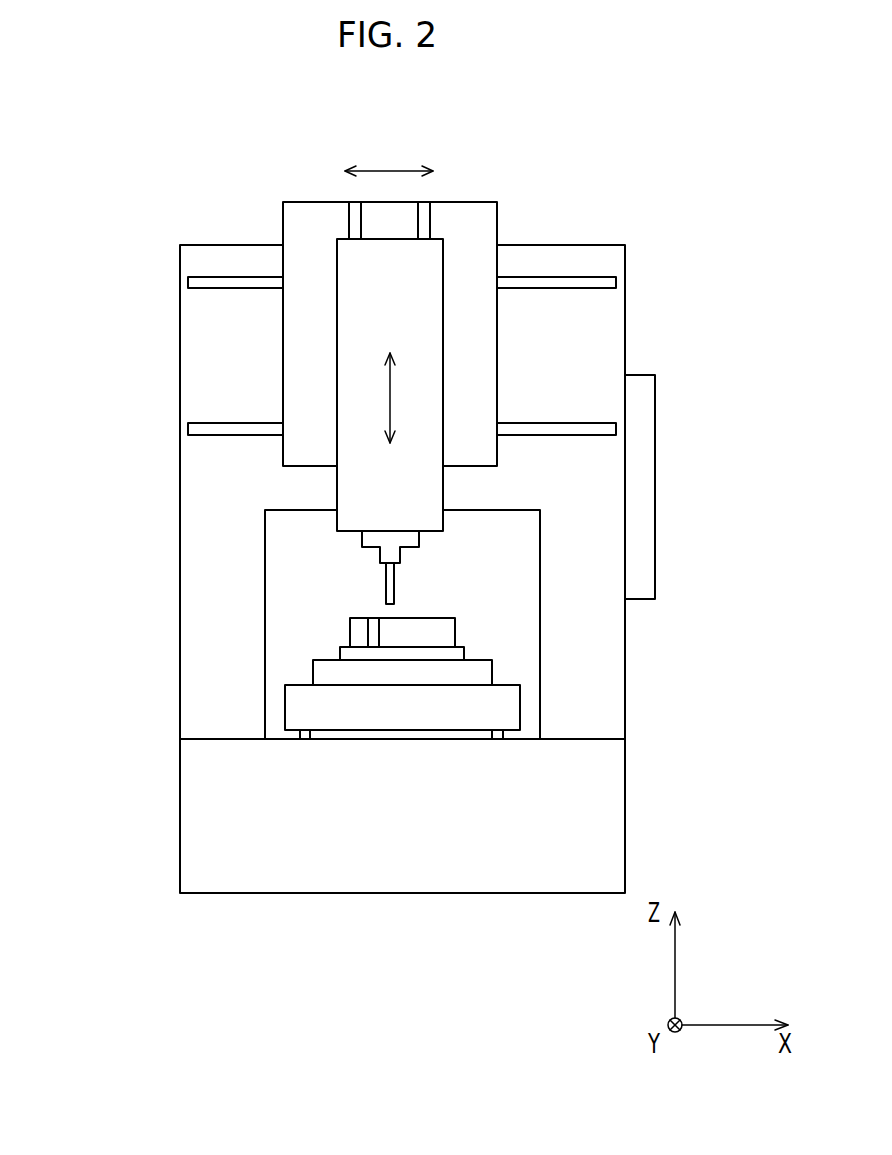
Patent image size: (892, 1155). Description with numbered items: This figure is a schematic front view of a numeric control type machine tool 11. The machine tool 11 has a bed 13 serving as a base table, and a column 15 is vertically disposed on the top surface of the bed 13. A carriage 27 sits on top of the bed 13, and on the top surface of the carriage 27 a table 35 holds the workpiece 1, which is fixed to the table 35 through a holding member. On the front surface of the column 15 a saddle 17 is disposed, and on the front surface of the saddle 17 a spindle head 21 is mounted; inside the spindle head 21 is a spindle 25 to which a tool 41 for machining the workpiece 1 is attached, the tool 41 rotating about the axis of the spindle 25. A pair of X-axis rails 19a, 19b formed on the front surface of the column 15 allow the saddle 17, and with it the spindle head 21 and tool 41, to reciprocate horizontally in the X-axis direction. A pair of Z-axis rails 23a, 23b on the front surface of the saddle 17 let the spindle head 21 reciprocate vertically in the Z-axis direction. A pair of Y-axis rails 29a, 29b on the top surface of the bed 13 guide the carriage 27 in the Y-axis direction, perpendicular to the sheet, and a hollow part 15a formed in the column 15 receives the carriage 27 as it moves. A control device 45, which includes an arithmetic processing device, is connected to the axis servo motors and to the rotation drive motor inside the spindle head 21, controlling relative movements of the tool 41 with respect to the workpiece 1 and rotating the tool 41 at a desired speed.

The workpiece 1 is at (432, 635).
The machine tool 11 is at (460, 182).
The bed 13 is at (597, 833).
The column 15 is at (193, 262).
The hollow part 15a is at (497, 512).
The saddle 17 is at (483, 238).
The X-axis rail 19a is at (202, 283).
The X-axis rail 19b is at (195, 429).
The spindle head 21 is at (337, 388).
The Z-axis rail 23a is at (355, 228).
The Z-axis rail 23b is at (423, 230).
The spindle 25 is at (362, 540).
The carriage 27 is at (343, 723).
The Y-axis rail 29a is at (305, 739).
The Y-axis rail 29b is at (502, 739).
The table 35 is at (483, 672).
The tool 41 is at (386, 588).
The control device 45 is at (637, 392).